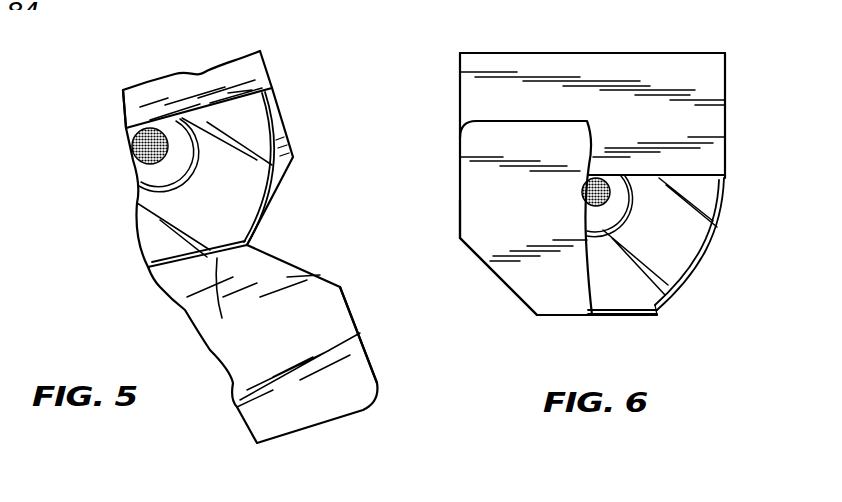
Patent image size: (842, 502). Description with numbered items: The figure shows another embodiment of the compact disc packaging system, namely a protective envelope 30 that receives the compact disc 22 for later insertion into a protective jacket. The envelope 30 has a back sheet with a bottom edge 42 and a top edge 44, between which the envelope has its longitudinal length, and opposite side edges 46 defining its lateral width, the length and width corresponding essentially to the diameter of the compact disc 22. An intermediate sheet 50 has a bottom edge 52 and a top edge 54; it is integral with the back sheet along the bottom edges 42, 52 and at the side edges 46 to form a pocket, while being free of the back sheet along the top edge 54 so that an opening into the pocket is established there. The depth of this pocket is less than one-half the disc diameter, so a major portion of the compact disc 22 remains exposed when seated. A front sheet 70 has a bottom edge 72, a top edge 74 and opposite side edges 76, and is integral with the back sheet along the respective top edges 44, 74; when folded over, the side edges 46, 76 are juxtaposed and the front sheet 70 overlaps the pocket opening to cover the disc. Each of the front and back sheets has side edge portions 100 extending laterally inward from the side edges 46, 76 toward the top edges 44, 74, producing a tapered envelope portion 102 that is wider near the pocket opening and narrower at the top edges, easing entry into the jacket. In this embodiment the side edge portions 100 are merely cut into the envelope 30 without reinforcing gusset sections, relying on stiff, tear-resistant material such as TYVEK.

In FIG. 5, the compact disc 22 is at (240, 167).
In FIG. 6, the compact disc 22 is at (703, 188).
In FIG. 5, the protective envelope 30 is at (286, 81).
In FIG. 6, the protective envelope 30 is at (452, 60).
In FIG. 6, the bottom edge 42 is at (540, 53).
In FIG. 5, the top edge 44 is at (235, 299).
In FIG. 6, the top edge 44 is at (633, 316).
In FIG. 5, the opposite side edges 46 is at (283, 118).
In FIG. 5, the intermediate sheet 50 is at (253, 63).
In FIG. 6, the intermediate sheet 50 is at (467, 103).
In FIG. 6, the bottom edge 52 is at (663, 53).
In FIG. 5, the top edge 54 is at (165, 155).
In FIG. 6, the top edge 54 is at (652, 177).
In FIG. 5, the front sheet 70 is at (360, 384).
In FIG. 6, the front sheet 70 is at (483, 210).
In FIG. 6, the bottom edge 72 is at (553, 100).
In FIG. 5, the top edge 74 is at (225, 256).
In FIG. 6, the top edge 74 is at (564, 316).
In FIG. 5, the opposite side edges 76 is at (352, 310).
In FIG. 6, the opposite side edges 76 is at (420, 254).
In FIG. 5, the side edge portion 100 is at (270, 203).
In FIG. 6, the side edge portion 100 is at (683, 283).
In FIG. 6, the envelope portion 102 is at (524, 284).